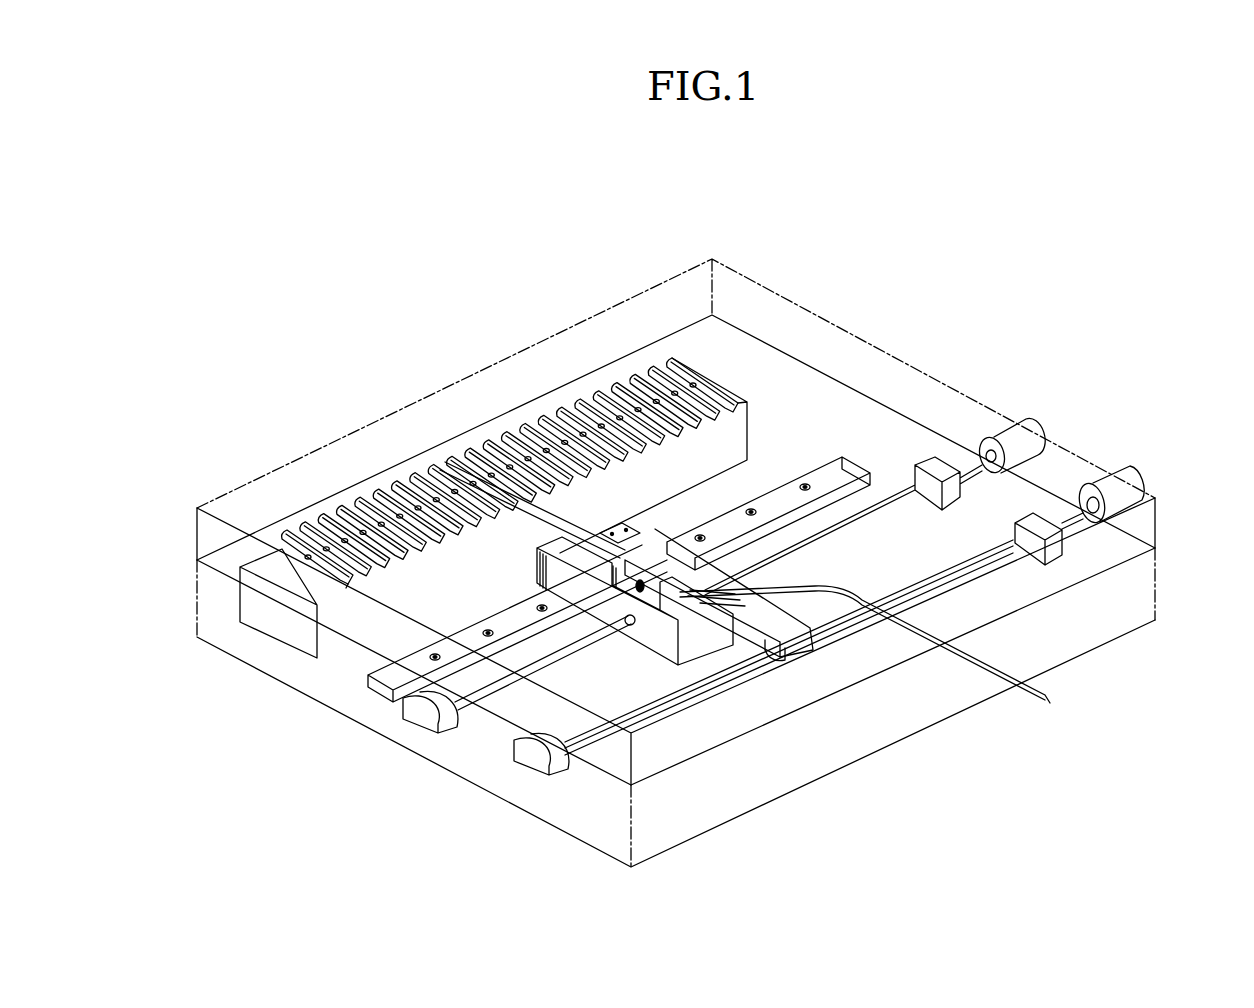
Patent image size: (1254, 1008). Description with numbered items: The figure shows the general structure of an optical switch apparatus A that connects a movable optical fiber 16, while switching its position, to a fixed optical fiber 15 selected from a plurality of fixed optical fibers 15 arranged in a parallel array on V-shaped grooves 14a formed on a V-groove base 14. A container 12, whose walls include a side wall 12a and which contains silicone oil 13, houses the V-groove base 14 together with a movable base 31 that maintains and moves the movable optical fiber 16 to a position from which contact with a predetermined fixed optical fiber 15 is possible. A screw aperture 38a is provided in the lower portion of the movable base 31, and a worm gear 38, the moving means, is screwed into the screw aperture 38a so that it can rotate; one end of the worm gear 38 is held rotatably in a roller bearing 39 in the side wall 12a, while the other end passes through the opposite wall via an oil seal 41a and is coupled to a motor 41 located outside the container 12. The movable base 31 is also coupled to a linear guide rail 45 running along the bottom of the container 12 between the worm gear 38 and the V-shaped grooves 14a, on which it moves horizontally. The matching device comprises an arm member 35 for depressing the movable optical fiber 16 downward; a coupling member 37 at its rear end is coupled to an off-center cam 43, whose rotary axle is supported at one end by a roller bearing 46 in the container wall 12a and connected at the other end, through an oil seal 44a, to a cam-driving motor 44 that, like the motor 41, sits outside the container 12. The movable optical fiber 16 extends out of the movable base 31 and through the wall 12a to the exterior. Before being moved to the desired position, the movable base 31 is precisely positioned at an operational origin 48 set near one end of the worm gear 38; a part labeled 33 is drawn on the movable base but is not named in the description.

The container 12 is at (765, 300).
The side wall 12a is at (246, 655).
The silicone oil 13 is at (790, 378).
The V-groove base 14 is at (548, 410).
The V-shaped grooves 14a is at (705, 433).
The fixed optical fibers 15 is at (572, 383).
The movable optical fiber 16 is at (500, 482).
The movable base 31 is at (668, 655).
The fiber holder pad 33 is at (642, 578).
The arm member 35 is at (767, 622).
The coupling member 37 is at (782, 650).
The worm gear 38 is at (537, 675).
The screw aperture 38a is at (633, 627).
The roller bearing 39 is at (425, 720).
The motor 41 is at (1005, 432).
The oil seal 41a is at (934, 458).
The off-center cam 43 is at (650, 718).
The motor 44 is at (1110, 495).
The oil seal 44a is at (1035, 512).
The linear guide rail 45 is at (366, 664).
The roller bearing 46 is at (542, 768).
The operational origin 48 is at (890, 470).
The optical switch apparatus A is at (768, 243).